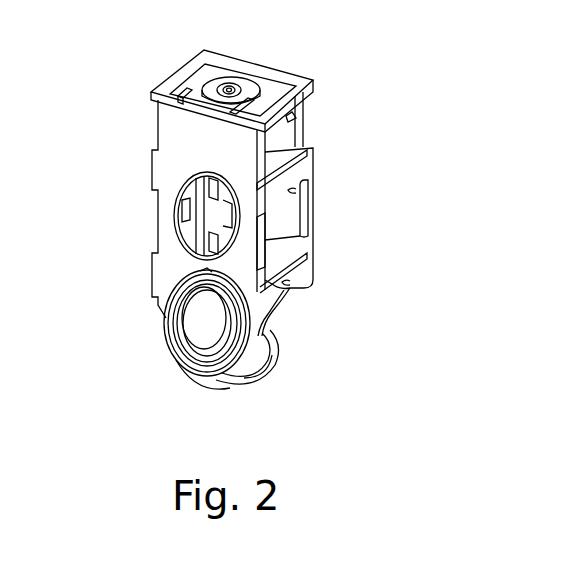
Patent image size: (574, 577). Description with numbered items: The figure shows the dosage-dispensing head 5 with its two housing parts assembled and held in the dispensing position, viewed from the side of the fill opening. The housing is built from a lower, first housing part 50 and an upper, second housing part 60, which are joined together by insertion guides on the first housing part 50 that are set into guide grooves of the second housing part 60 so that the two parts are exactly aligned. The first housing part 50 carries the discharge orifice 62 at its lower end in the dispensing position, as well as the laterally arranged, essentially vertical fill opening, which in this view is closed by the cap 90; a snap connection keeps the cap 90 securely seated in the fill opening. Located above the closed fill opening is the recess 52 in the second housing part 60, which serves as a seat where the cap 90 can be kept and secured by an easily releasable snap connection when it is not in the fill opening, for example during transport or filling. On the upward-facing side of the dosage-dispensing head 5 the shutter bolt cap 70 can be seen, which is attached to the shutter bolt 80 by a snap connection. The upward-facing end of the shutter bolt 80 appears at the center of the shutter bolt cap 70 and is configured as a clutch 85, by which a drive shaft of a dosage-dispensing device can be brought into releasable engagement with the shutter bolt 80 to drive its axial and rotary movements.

The dosage-dispensing head 5 is at (124, 184).
The first housing part 50 is at (262, 337).
The recess 52 is at (210, 215).
The second housing part 60 is at (276, 188).
The discharge orifice 62 is at (228, 398).
The shutter bolt cap 70 is at (250, 88).
The shutter bolt 80 is at (219, 86).
The clutch 85 is at (229, 86).
The cap 90 is at (172, 325).